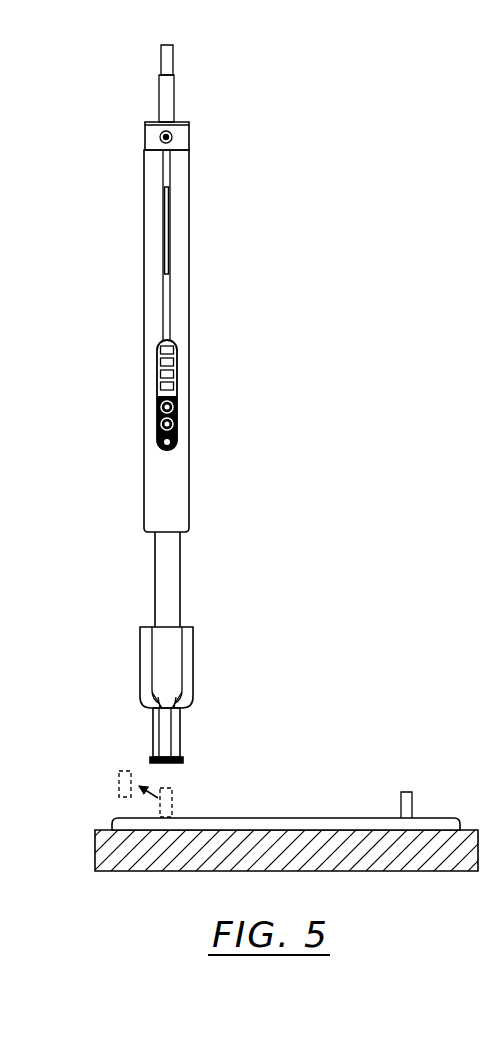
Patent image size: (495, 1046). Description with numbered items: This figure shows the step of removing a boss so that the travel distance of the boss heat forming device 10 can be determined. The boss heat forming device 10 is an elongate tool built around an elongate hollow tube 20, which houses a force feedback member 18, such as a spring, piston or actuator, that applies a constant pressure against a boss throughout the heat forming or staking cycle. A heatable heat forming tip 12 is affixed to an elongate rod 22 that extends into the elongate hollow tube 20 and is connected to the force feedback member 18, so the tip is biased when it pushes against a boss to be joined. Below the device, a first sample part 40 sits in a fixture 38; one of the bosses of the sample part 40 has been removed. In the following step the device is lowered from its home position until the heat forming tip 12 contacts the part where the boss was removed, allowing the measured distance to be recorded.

The boss heat forming device 10 is at (216, 201).
The heatable heat forming tip 12 is at (174, 732).
The force feedback member 18 is at (176, 362).
The elongate hollow tube 20 is at (186, 288).
The elongate rod 22 is at (180, 570).
The fixture 38 is at (400, 858).
The sample part 40 is at (276, 820).